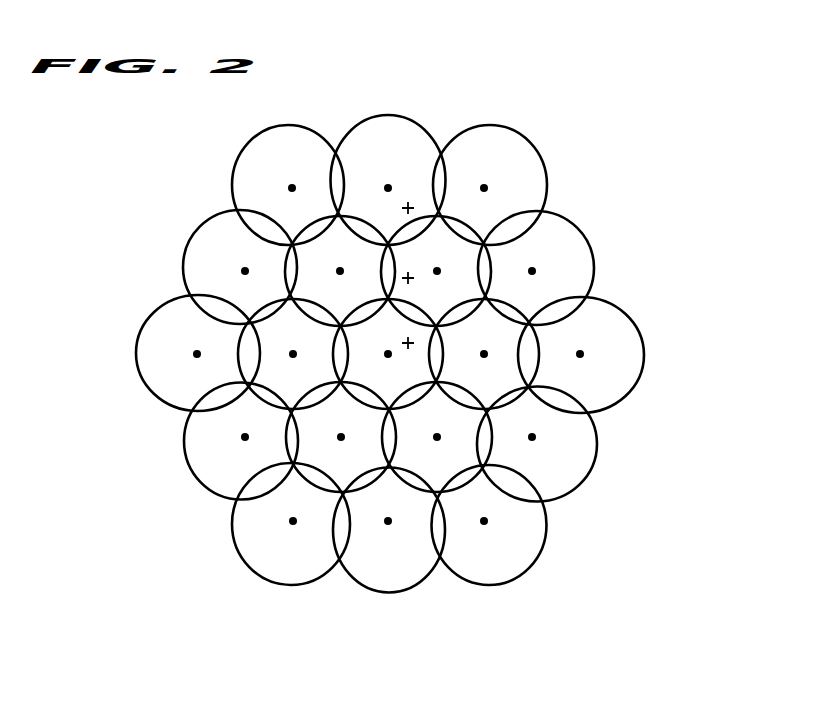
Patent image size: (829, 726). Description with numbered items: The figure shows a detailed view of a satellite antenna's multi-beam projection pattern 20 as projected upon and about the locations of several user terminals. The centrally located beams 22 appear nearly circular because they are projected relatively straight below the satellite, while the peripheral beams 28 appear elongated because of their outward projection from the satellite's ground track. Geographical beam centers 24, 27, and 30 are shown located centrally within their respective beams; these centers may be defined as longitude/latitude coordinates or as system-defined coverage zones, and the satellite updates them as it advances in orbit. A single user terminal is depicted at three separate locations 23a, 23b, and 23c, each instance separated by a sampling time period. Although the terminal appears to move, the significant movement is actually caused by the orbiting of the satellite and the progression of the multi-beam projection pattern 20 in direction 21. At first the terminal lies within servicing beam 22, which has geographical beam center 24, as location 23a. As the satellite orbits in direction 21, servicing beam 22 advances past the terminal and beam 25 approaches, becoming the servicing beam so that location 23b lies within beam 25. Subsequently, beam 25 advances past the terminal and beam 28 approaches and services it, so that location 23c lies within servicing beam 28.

The multi-beam projection pattern 20 is at (140, 187).
The direction 21 is at (682, 385).
The centrally located beam 22 is at (405, 410).
The user terminal location 23a is at (412, 341).
The user terminal location 23b is at (411, 276).
The user terminal location 23c is at (410, 206).
The geographical beam center 24 is at (386, 355).
The beam 25 is at (472, 227).
The geographical beam center 27 is at (439, 270).
The peripheral beam 28 is at (356, 142).
The geographical beam center 30 is at (388, 186).